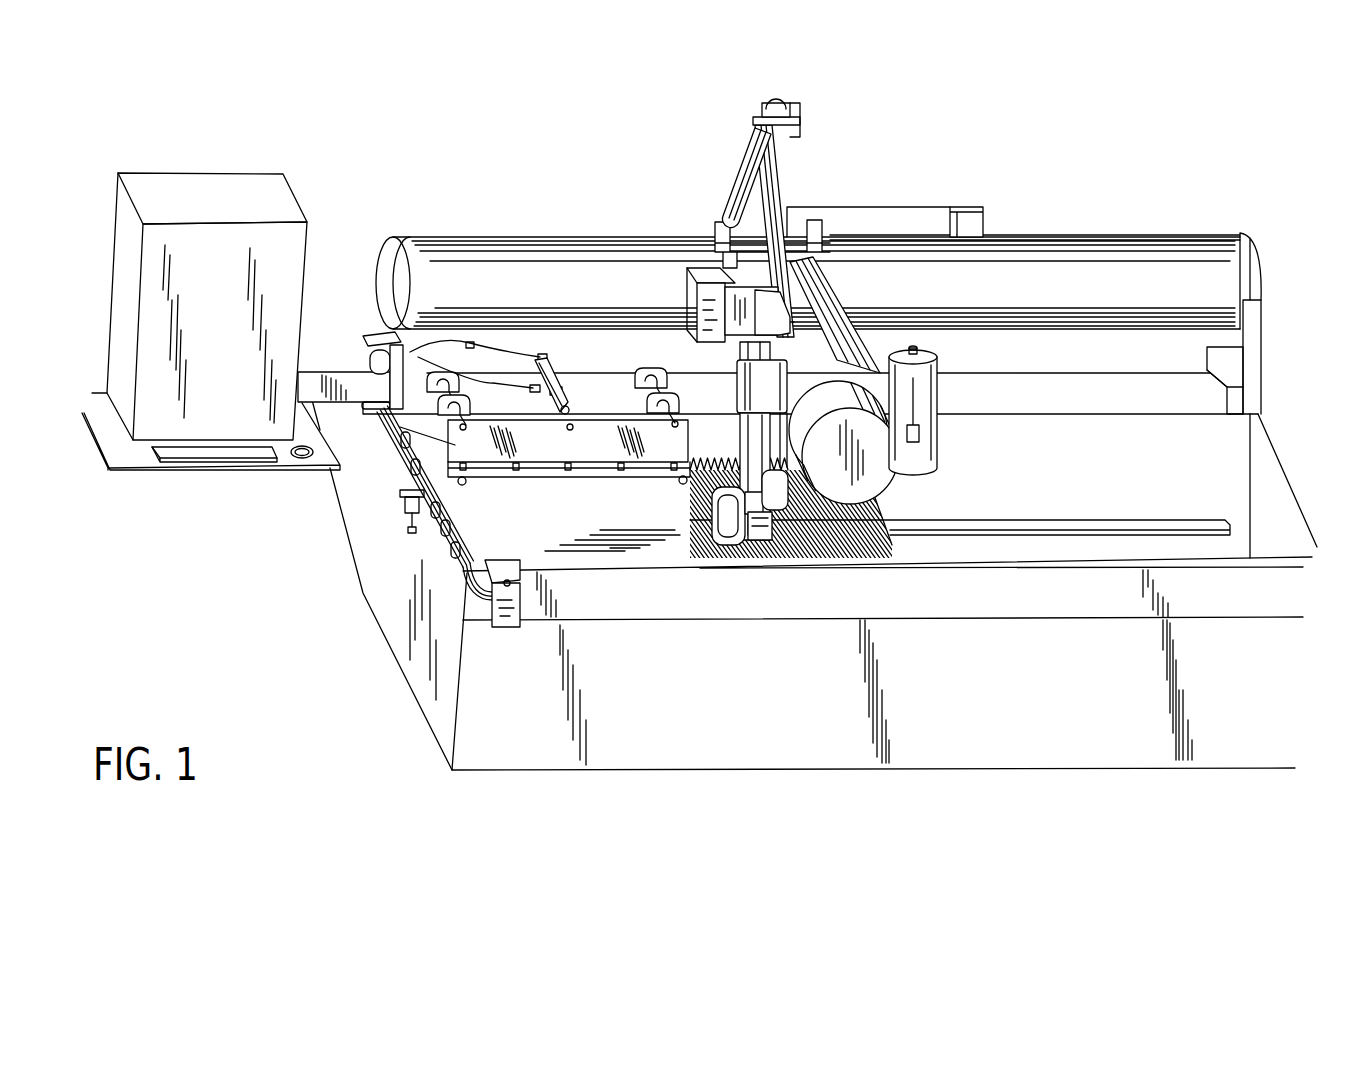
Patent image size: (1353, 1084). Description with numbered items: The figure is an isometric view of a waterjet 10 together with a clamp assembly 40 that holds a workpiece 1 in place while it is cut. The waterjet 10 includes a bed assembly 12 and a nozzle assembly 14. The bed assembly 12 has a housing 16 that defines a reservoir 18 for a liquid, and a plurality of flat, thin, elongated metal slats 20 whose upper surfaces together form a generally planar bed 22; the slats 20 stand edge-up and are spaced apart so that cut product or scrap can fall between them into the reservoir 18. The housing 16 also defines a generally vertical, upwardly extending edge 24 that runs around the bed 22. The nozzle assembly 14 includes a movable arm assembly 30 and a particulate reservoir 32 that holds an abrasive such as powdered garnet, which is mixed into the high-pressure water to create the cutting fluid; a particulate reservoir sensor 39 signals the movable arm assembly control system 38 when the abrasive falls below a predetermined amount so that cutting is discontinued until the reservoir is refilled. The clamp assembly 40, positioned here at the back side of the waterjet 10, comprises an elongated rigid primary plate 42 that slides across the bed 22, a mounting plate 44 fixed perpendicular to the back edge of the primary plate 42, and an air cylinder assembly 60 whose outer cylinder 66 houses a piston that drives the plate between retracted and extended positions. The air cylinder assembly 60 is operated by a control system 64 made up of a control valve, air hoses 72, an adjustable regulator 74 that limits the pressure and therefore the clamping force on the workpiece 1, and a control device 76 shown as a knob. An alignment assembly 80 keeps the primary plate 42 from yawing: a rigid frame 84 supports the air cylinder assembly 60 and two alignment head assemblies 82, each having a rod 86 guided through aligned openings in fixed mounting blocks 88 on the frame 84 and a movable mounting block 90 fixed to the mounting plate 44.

The workpiece 1 is at (630, 543).
The waterjet 10 is at (800, 518).
The bed assembly 12 is at (1082, 490).
The nozzle assembly 14 is at (738, 470).
The housing 16 is at (390, 552).
The reservoir 18 is at (1165, 548).
The slats 20 is at (890, 540).
The bed 22 is at (935, 505).
The edge 24 is at (563, 530).
The movable arm assembly 30 is at (740, 180).
The particulate reservoir 32 is at (964, 410).
The movable arm assembly control system 38 is at (168, 188).
The particulate reservoir sensor 39 is at (920, 433).
The clamp assembly 40 is at (455, 449).
The primary plate 42 is at (490, 507).
The mounting plate 44 is at (568, 323).
The air cylinder assembly 60 is at (545, 362).
The air cylinder assembly control system 64 is at (516, 640).
The outer cylinder 66 is at (595, 437).
The air hoses 72 is at (478, 385).
The regulator 74 is at (403, 502).
The control device 76 is at (887, 661).
The alignment assembly 80 is at (418, 377).
The alignment head assembly 82 is at (557, 306).
The frame 84 is at (625, 373).
The rod 86 is at (683, 477).
The fixed mounting blocks 88 is at (672, 377).
The movable mounting block 90 is at (677, 403).